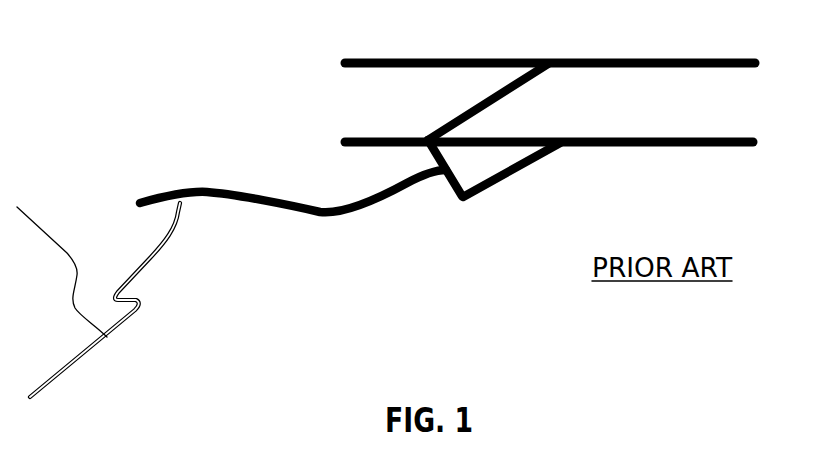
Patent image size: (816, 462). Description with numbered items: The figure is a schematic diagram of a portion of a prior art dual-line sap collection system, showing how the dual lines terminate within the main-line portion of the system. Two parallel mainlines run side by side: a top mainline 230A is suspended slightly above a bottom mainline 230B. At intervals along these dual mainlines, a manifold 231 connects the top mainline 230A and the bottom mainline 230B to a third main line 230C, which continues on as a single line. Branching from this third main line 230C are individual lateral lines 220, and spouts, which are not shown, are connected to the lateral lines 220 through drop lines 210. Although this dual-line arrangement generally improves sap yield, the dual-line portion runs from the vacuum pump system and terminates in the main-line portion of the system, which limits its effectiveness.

The drop line 210 is at (33, 217).
The lateral line 220 is at (143, 270).
The top mainline 230A is at (480, 100).
The bottom mainline 230B is at (528, 166).
The third main line 230C is at (262, 146).
The manifold 231 is at (467, 200).